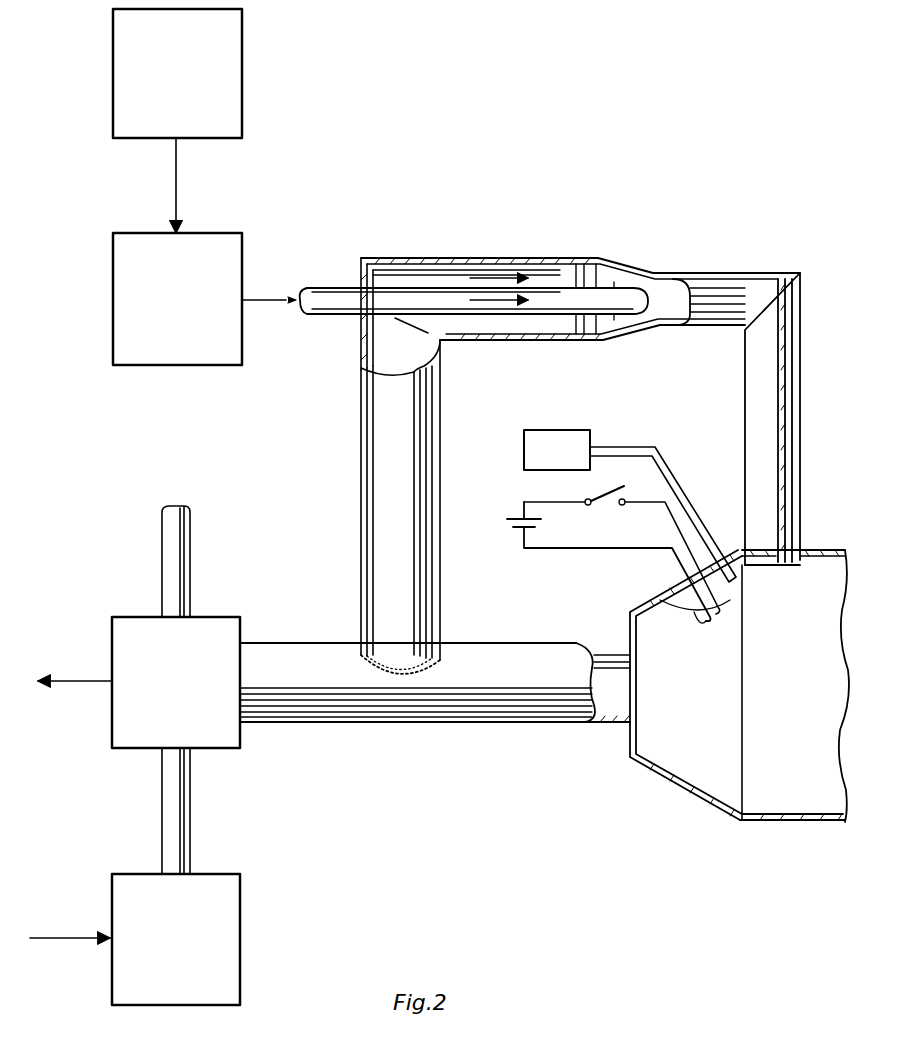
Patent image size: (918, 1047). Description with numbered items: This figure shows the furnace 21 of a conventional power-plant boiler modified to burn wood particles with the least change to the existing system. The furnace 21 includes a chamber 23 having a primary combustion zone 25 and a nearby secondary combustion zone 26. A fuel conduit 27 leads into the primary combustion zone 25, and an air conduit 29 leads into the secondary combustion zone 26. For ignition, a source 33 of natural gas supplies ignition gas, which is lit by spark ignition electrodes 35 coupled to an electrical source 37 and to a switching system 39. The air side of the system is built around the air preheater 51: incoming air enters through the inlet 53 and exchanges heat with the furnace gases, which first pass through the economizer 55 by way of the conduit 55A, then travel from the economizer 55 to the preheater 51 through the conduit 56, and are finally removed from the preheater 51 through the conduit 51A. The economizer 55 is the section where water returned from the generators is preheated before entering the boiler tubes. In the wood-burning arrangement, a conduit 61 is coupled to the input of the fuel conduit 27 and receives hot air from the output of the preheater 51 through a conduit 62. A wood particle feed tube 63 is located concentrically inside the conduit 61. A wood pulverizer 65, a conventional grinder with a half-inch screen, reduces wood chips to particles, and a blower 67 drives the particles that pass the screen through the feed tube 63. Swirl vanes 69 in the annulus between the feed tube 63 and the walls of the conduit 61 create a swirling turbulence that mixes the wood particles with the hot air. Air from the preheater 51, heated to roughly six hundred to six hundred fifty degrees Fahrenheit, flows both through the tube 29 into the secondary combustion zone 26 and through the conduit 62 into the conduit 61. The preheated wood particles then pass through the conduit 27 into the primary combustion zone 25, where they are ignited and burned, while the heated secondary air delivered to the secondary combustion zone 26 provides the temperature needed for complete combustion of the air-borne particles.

The furnace 21 is at (752, 838).
The chamber 23 is at (696, 792).
The primary combustion zone 25 is at (790, 582).
The secondary combustion zone 26 is at (702, 700).
The fuel conduit 27 is at (742, 402).
The air conduit 29 is at (462, 728).
The source of natural gas 33 is at (550, 437).
The spark ignition electrodes 35 is at (700, 608).
The electrical source 37 is at (508, 530).
The switching system 39 is at (588, 500).
The air preheater 51 is at (215, 617).
The conduit 51A is at (90, 680).
The inlet 53 is at (162, 547).
The economizer 55 is at (241, 928).
The conduit 55A is at (80, 942).
The conduit 56 is at (185, 790).
The conduit 61 is at (500, 345).
The conduit 62 is at (360, 470).
The wood particle feed tube 63 is at (447, 262).
The wood pulverizer 65 is at (243, 58).
The blower 67 is at (243, 250).
The swirl vanes 69 is at (584, 270).